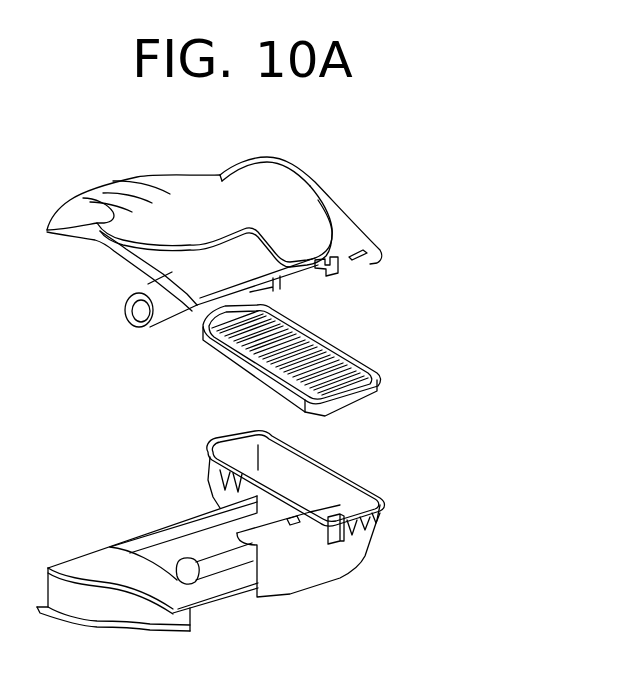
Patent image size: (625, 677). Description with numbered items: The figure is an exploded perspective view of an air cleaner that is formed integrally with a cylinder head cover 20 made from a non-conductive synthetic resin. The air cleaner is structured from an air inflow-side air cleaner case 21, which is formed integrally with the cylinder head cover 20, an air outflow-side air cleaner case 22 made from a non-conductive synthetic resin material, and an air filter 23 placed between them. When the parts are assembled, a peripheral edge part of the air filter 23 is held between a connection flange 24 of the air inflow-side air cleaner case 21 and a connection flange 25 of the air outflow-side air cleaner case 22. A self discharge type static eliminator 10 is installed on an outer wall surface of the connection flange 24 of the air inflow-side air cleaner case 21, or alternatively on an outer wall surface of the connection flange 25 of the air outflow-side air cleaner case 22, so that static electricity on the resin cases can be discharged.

The self discharge type static eliminator 10 is at (358, 258).
The cylinder head cover 20 is at (283, 573).
The air inflow-side air cleaner case 21 is at (357, 542).
The air outflow-side air cleaner case 22 is at (333, 211).
The air filter 23 is at (317, 350).
The connection flange 24 is at (233, 443).
The connection flange 25 is at (368, 251).